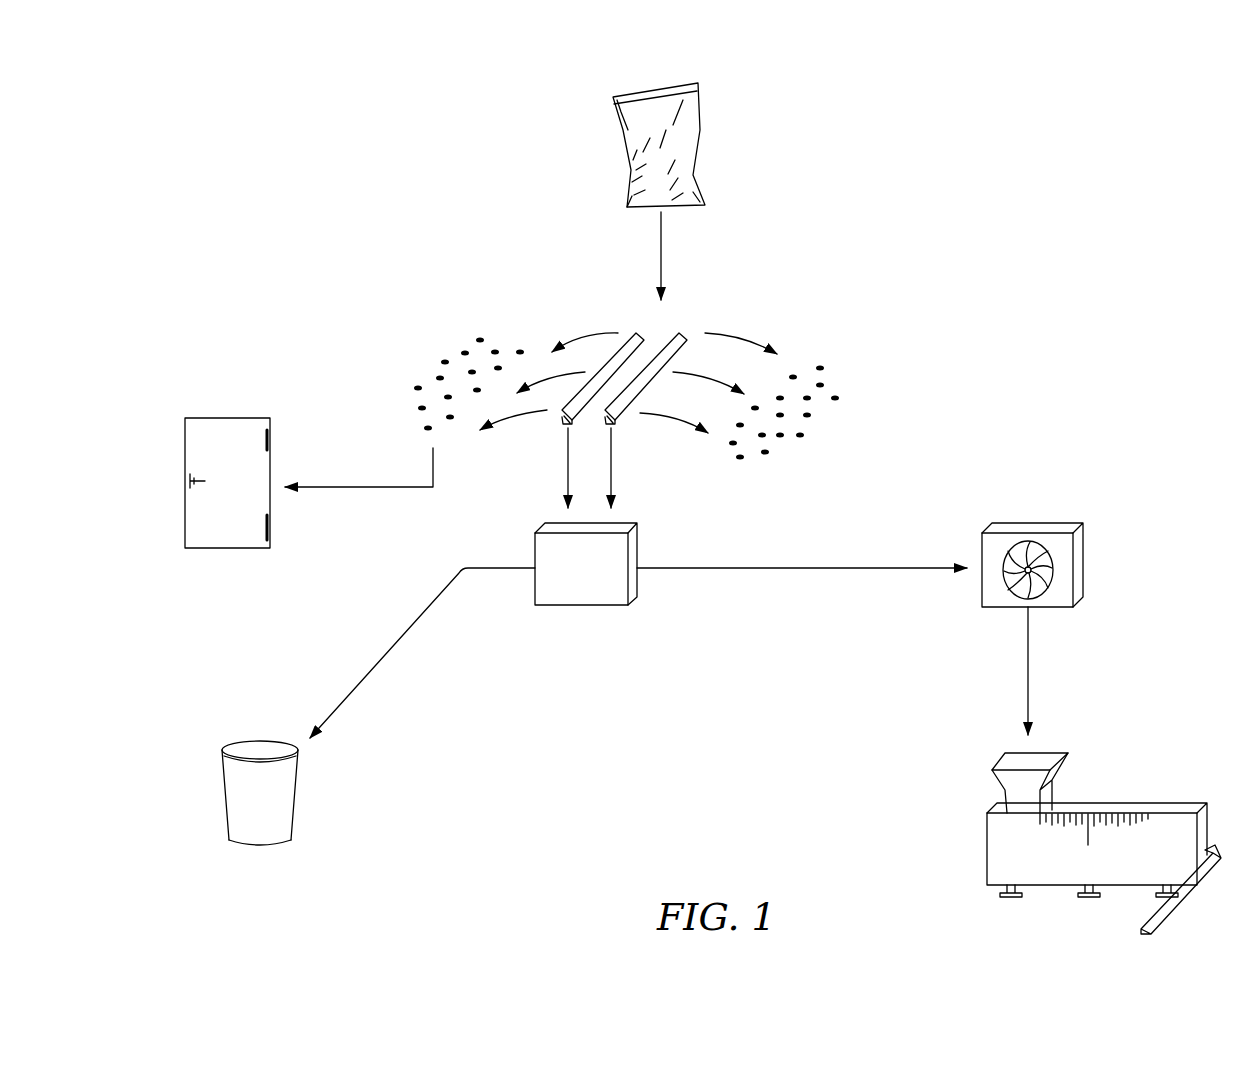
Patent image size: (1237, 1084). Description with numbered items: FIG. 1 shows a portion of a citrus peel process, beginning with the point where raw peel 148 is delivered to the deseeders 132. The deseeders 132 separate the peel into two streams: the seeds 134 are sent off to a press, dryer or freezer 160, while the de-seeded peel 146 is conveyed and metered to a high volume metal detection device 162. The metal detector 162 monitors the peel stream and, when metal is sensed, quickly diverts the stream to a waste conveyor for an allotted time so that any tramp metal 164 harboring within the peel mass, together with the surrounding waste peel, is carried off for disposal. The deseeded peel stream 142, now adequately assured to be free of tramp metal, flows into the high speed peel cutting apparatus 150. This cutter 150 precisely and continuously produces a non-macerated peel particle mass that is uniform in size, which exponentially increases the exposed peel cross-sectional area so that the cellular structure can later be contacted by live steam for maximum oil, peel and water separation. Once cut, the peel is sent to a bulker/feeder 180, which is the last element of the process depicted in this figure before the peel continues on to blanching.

The raw peel 148 is at (707, 160).
The deseeders 132 is at (692, 315).
The seeds 134 is at (423, 368).
The de-seeded peel 146 is at (613, 462).
The metal detection device 162 is at (633, 585).
The deseeded peel stream 142 is at (813, 570).
The press, dryer or freezer 160 is at (272, 510).
The high speed peel cutting apparatus 150 is at (1005, 608).
The bulker/feeder 180 is at (985, 847).
The tramp metal 164 is at (290, 797).